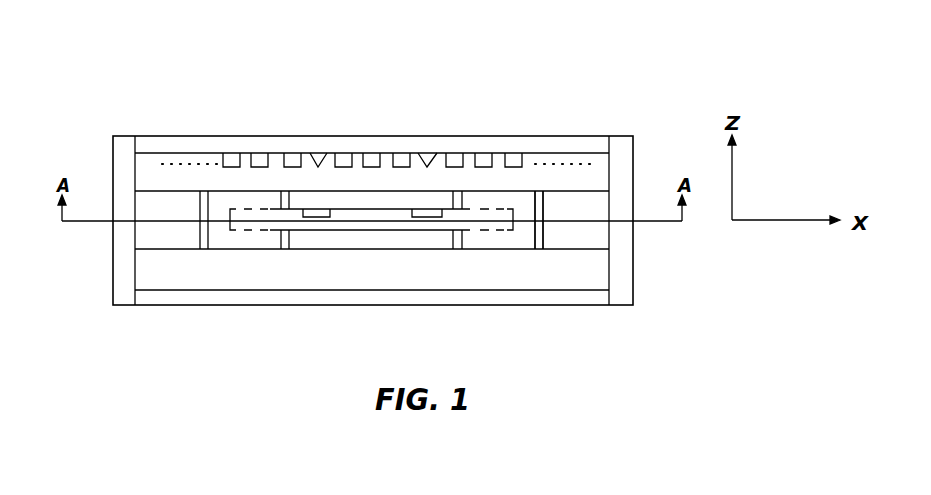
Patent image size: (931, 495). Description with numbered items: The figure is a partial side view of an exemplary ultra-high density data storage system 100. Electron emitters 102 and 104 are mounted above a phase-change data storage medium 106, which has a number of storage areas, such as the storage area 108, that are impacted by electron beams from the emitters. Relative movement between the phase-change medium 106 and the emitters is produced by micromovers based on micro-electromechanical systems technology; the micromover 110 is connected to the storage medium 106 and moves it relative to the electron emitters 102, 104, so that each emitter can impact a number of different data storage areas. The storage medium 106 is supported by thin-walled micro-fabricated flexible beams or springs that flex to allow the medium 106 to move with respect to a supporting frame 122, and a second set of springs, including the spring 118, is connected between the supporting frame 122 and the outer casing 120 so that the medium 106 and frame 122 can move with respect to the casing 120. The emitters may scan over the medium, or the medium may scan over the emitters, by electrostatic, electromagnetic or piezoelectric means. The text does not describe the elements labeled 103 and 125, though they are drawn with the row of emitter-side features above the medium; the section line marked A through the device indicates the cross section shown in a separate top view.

The ultra-high density data storage system 100 is at (105, 70).
The electron emitter 102 is at (318, 162).
The sample wells 103 is at (293, 153).
The electron emitter 104 is at (427, 158).
The phase-change data storage medium 106 is at (240, 226).
The storage area 108 is at (310, 209).
The micromover 110 is at (177, 249).
The spring 118 is at (598, 220).
The outer casing 120 is at (620, 275).
The supporting frame 122 is at (535, 203).
The loading well 125 is at (373, 152).